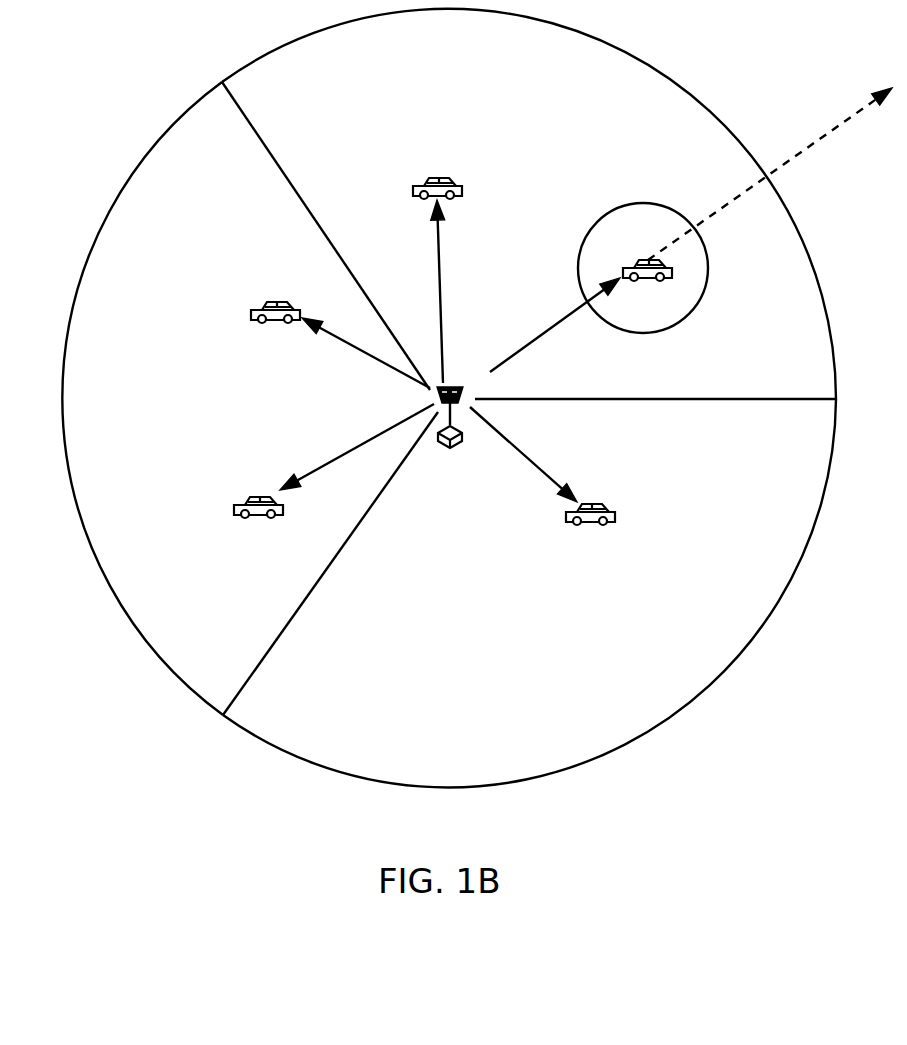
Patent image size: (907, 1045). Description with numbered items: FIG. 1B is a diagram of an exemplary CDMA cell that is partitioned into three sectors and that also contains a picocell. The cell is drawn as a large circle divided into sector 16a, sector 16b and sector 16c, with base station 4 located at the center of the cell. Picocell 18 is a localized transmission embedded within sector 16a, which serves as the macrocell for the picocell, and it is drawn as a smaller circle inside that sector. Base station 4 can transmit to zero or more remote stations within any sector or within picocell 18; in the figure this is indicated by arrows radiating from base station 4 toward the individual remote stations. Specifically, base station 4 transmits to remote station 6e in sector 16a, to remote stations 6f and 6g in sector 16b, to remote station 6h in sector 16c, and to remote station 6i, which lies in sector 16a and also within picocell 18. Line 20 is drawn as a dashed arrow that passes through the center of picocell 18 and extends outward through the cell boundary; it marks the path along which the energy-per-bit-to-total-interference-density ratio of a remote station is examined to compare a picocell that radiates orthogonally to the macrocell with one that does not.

The base station 4 is at (456, 388).
The remote station 6e is at (425, 178).
The remote station 6f is at (262, 302).
The remote station 6g is at (258, 497).
The remote station 6h is at (598, 504).
The remote station 6i is at (640, 259).
The sector 16a is at (578, 24).
The sector 16b is at (135, 167).
The sector 16c is at (780, 602).
The picocell 18 is at (650, 203).
The line 20 is at (835, 132).